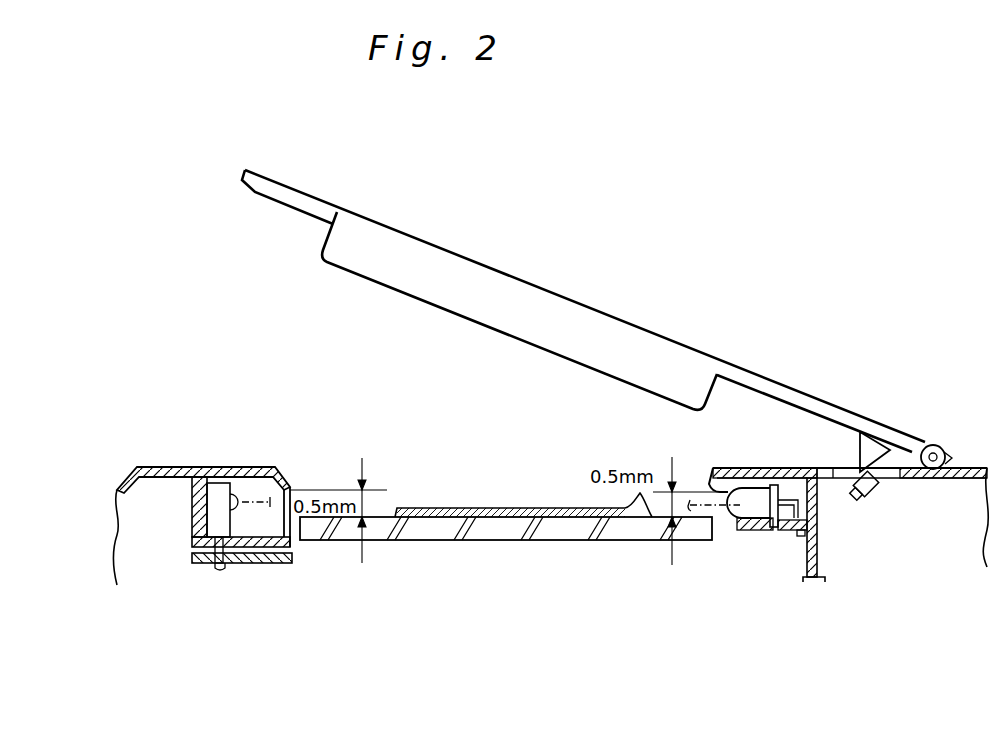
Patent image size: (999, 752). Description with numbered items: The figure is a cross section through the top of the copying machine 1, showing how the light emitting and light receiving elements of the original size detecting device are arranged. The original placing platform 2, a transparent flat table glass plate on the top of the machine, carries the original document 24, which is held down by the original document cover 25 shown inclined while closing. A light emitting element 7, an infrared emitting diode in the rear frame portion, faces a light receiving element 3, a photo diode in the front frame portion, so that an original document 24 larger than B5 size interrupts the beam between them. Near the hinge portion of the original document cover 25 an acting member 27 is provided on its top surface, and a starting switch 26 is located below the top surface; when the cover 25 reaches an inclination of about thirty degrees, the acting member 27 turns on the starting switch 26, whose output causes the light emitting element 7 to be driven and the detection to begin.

The original document cover 25 is at (316, 205).
The copying machine 1 is at (852, 383).
The acting member 27 is at (870, 447).
The starting switch 26 is at (877, 490).
The light emitting element 7 is at (740, 507).
The original placing platform 2 is at (430, 527).
The original document 24 is at (473, 510).
The light receiving element 3 is at (218, 518).